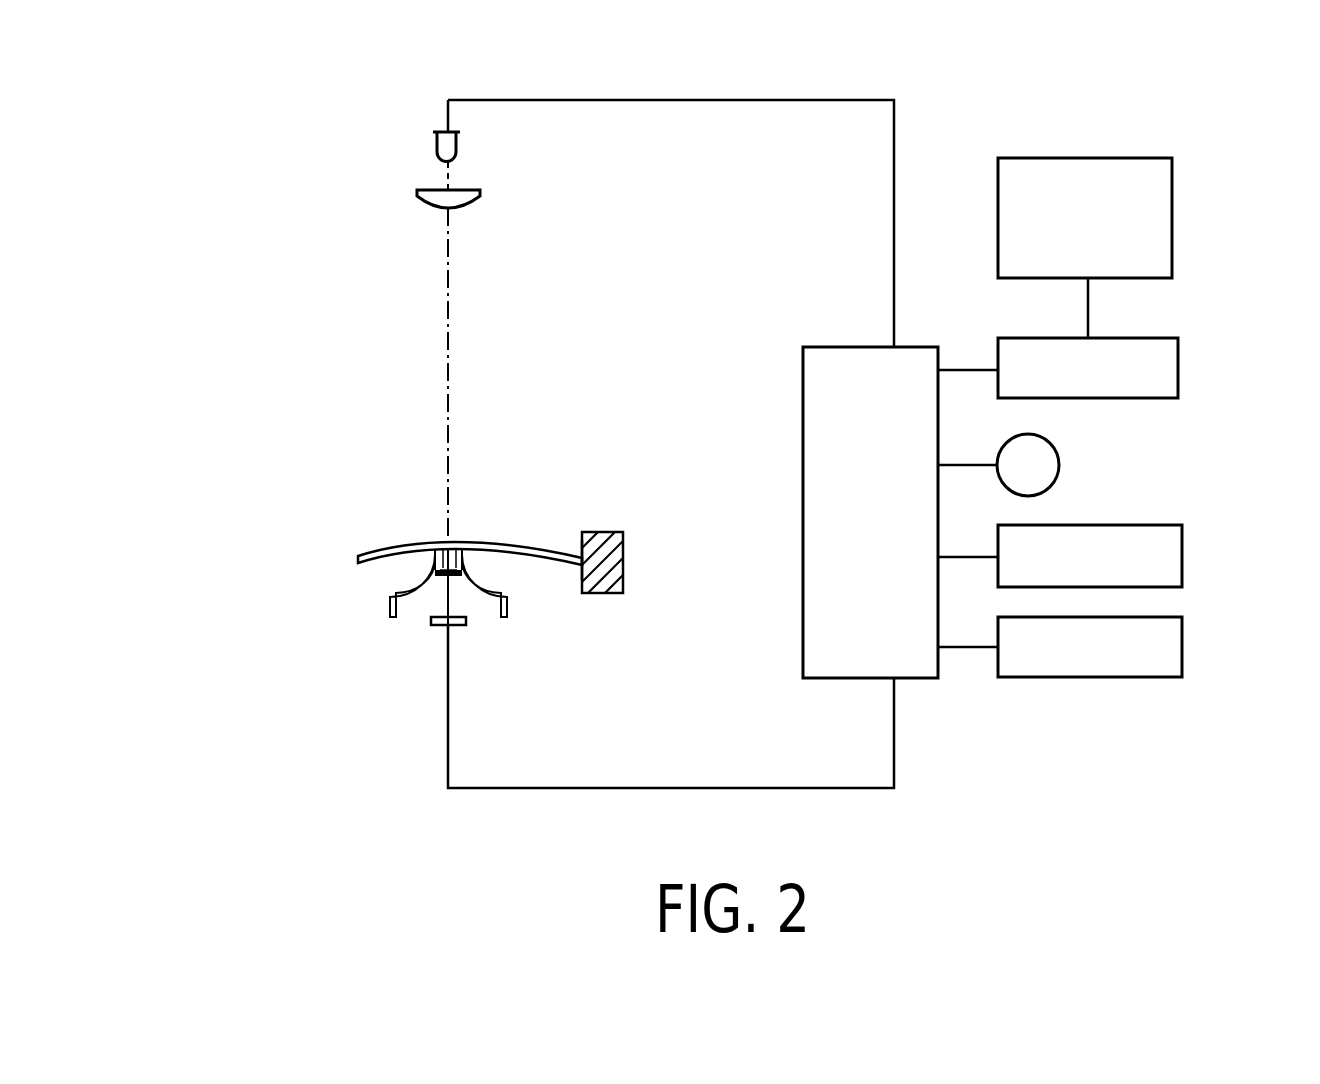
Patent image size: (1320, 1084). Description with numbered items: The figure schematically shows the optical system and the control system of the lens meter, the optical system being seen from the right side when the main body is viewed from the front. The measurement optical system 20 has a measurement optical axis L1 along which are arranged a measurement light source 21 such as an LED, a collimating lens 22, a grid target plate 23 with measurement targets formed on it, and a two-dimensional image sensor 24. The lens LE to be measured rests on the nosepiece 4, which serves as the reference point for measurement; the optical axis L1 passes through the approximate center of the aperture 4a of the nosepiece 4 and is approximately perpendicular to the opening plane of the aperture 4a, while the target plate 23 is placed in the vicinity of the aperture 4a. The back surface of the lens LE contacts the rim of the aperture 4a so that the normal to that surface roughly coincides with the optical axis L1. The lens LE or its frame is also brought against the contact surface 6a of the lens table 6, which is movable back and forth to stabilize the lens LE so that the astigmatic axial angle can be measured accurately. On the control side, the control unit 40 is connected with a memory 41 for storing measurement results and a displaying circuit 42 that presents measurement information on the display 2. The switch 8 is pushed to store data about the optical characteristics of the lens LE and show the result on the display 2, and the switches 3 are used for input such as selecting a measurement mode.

The measurement optical system 20 is at (234, 286).
The measurement light source 21 is at (437, 145).
The collimating lens 22 is at (420, 193).
The measurement optical axis L1 is at (447, 368).
The lens LE is at (422, 545).
The nosepiece 4 is at (435, 558).
The aperture 4a is at (455, 565).
The lens table 6 is at (623, 567).
The contact surface 6a is at (582, 546).
The grid target plate 23 is at (443, 580).
The two-dimensional image sensor 24 is at (457, 627).
The control unit 40 is at (803, 485).
The display 2 is at (1113, 158).
The displaying circuit 42 is at (1178, 368).
The switch 8 is at (1060, 465).
The memory 41 is at (1182, 550).
The switches 3 is at (1182, 643).